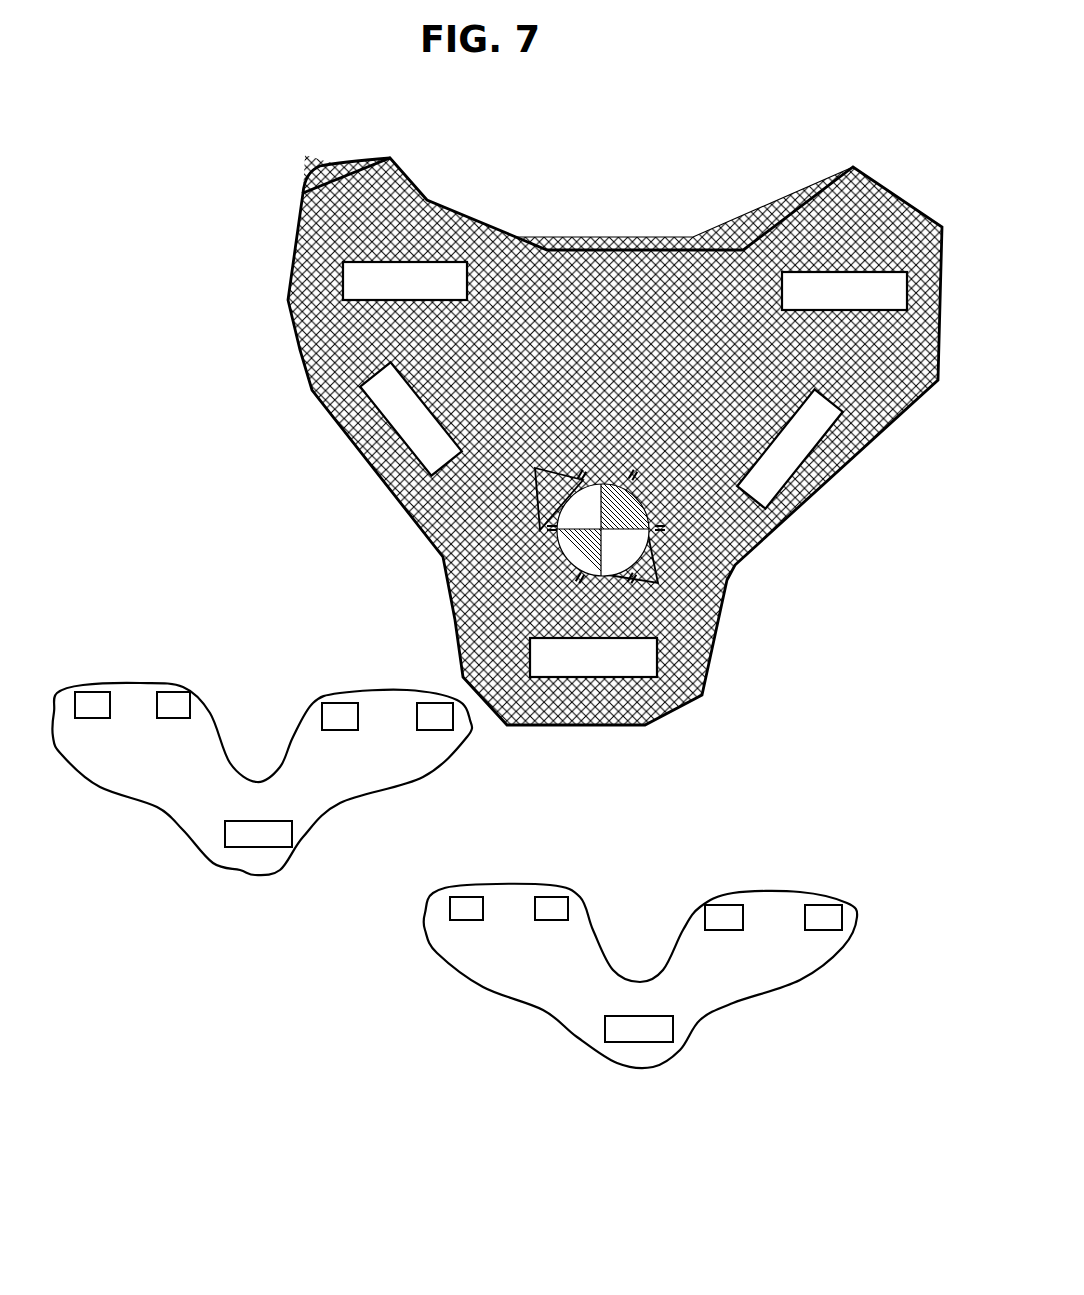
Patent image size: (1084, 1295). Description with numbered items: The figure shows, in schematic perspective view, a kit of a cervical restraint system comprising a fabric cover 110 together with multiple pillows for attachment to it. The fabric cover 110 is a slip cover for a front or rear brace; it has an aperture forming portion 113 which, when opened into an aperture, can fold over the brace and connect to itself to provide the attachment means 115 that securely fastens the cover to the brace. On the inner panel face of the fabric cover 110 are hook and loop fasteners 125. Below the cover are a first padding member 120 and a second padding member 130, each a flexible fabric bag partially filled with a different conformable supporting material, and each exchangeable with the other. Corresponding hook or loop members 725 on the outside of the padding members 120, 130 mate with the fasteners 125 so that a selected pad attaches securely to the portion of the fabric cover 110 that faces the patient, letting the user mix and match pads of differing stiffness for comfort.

The fabric cover 110 is at (323, 280).
The aperture forming portion 113 is at (575, 517).
The attachment means 115 is at (653, 550).
The first padding member 120 is at (262, 779).
The hook and loop fasteners 125 is at (368, 393).
The second padding member 130 is at (640, 976).
The hook or loop members 725 is at (192, 812).